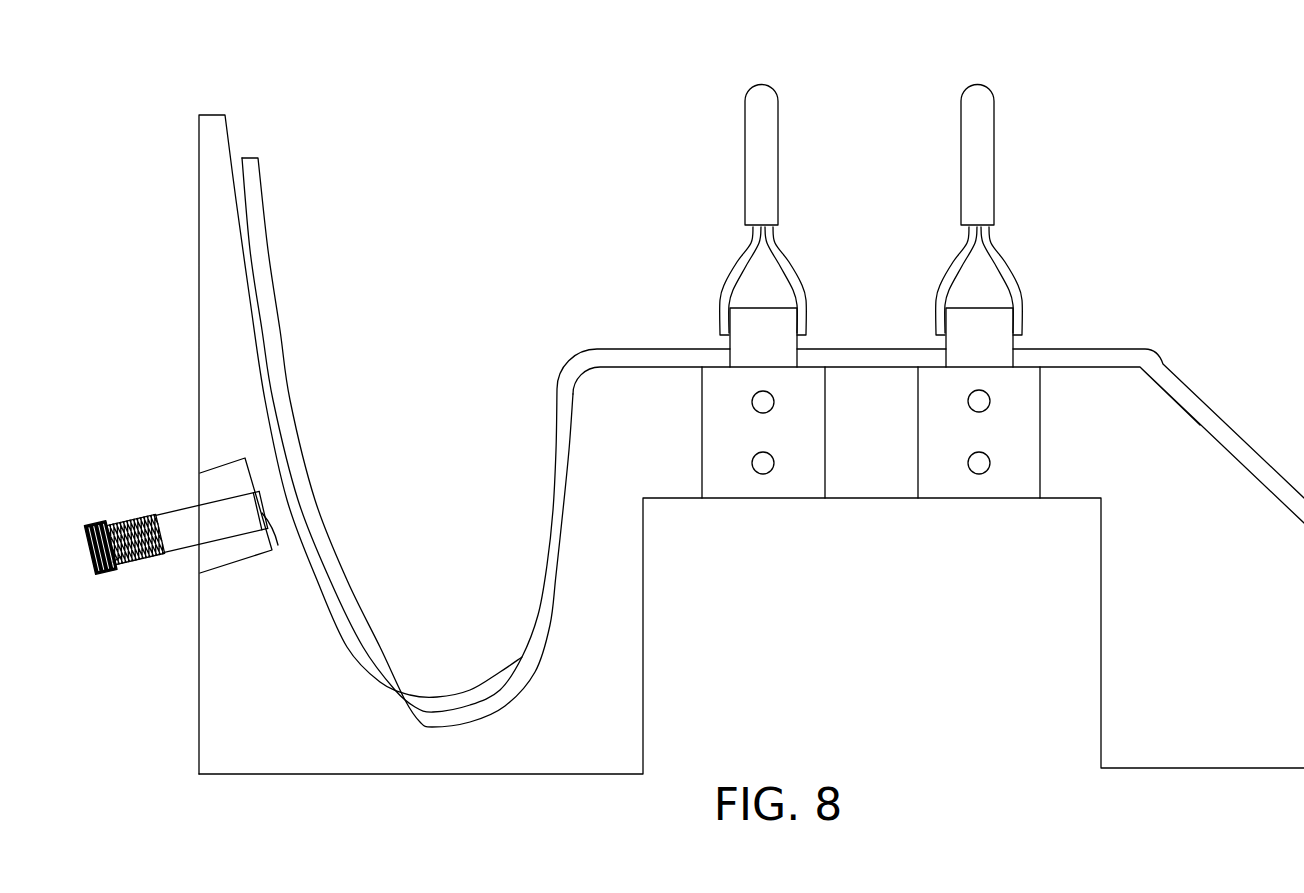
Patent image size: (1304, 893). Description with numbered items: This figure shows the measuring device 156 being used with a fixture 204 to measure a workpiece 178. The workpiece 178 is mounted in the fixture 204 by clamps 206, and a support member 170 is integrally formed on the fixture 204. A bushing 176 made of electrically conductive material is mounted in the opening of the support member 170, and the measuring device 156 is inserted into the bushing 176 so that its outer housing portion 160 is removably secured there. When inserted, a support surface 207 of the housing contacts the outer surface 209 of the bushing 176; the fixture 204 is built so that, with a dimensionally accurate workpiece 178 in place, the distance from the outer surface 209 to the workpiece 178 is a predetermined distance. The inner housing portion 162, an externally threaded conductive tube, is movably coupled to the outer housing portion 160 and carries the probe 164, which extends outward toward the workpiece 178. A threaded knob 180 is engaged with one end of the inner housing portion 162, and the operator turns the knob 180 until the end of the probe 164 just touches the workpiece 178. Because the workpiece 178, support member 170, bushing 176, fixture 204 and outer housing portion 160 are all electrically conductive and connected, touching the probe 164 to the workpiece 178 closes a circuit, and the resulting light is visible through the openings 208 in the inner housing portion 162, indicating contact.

The measuring device 156 is at (203, 534).
The outer housing portion 160 is at (212, 521).
The inner housing portion 162 is at (136, 539).
The probe 164 is at (292, 494).
The support member 170 is at (265, 460).
The bushing 176 is at (262, 515).
The workpiece 178 is at (338, 563).
The knob 180 is at (100, 548).
The fixture 204 is at (628, 600).
The clamps 206 is at (934, 130).
The support surface 207 is at (257, 492).
The openings 208 is at (122, 560).
The outer surface 209 is at (260, 510).